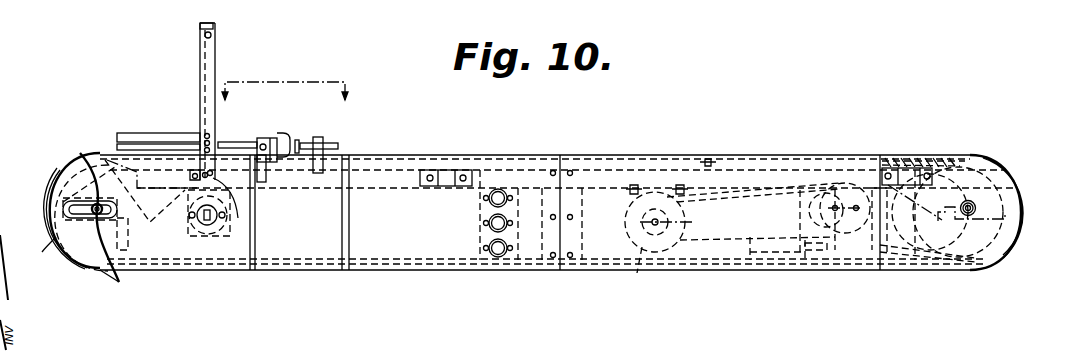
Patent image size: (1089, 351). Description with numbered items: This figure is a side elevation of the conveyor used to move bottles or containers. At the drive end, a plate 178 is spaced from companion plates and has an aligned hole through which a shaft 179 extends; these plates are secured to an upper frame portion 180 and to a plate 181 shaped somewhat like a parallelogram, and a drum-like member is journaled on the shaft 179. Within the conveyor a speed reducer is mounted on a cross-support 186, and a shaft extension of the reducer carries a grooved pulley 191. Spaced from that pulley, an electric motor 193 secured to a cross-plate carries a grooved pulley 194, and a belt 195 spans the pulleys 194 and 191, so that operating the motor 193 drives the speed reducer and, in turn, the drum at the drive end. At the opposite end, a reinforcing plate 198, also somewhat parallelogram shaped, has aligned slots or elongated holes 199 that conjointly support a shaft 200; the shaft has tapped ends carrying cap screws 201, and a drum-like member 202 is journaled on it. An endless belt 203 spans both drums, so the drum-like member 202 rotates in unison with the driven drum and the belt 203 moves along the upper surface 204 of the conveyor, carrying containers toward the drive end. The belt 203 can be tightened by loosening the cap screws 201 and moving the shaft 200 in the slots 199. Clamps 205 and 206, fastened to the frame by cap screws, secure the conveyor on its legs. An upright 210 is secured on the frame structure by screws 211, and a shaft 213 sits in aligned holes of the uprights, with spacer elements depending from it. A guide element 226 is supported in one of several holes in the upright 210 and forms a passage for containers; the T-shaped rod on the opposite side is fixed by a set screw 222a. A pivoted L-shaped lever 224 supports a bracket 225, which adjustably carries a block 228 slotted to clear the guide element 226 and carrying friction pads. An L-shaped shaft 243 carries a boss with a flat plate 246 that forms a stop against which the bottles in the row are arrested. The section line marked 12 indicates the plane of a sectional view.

The section line 12 is at (292, 102).
The plate 178 is at (986, 169).
The shaft 179 is at (973, 206).
The upper frame portion 180 is at (892, 168).
The plate 181 is at (957, 207).
The cross-support 186 is at (806, 262).
The grooved pulley 191 is at (803, 212).
The electric motor 193 is at (653, 268).
The grooved pulley 194 is at (675, 218).
The belt 195 is at (750, 258).
The reinforcing plate 198 is at (108, 162).
The aligned slots or elongated holes 199 is at (78, 218).
The shaft 200 is at (88, 166).
The cap screws 201 is at (127, 280).
The drum-like member 202 is at (42, 252).
The endless belt 203 is at (46, 206).
The upper surface 204 is at (610, 160).
The clamp 205 is at (918, 175).
The clamp 206 is at (448, 170).
The upright 210 is at (202, 58).
The screws 211 is at (217, 226).
The shaft 213 is at (212, 36).
The set screw 222a is at (190, 170).
The L-shaped lever 224 is at (273, 142).
The bracket 225 is at (233, 145).
The guide element 226 is at (155, 134).
The block 228 is at (266, 170).
The L-shaped shaft 243 is at (316, 143).
The flat plate 246 is at (300, 143).